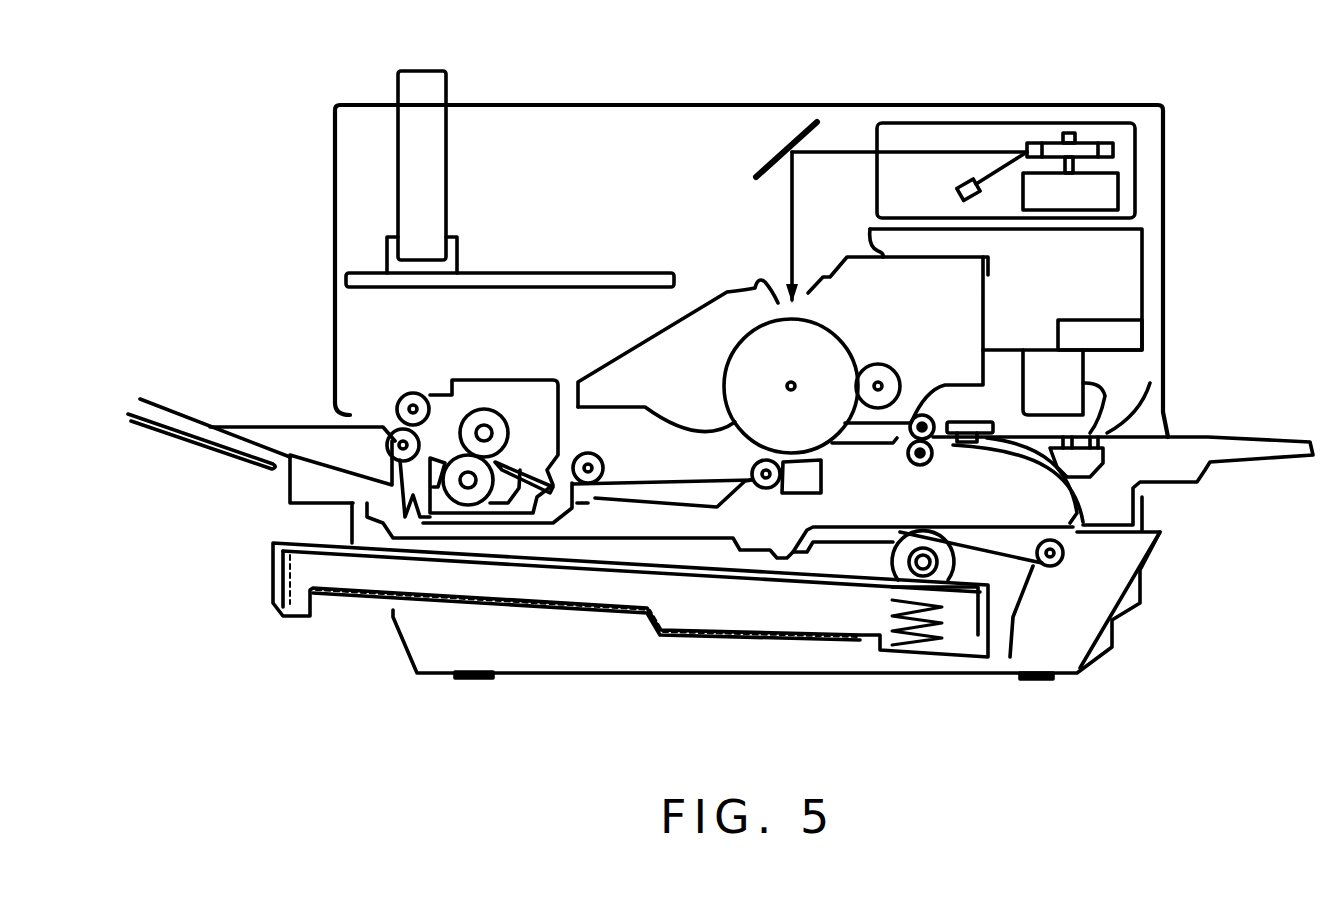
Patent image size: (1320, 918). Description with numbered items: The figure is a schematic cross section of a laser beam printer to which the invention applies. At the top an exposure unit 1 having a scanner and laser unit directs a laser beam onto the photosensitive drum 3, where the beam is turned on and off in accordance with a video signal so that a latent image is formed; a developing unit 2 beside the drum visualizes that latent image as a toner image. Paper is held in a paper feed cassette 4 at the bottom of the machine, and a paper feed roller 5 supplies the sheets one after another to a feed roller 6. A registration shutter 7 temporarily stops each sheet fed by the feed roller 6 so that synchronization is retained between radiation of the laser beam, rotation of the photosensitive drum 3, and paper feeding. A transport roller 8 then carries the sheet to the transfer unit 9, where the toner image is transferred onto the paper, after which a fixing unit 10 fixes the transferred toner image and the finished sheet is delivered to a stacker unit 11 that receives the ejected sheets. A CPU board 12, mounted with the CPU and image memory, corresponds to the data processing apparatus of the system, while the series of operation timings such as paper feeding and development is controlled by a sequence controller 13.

The exposure unit 1 is at (1137, 158).
The developing unit 2 is at (963, 307).
The photosensitive drum 3 is at (755, 330).
The paper feed cassette 4 is at (270, 572).
The paper feed roller 5 is at (902, 567).
The feed roller 6 is at (1040, 567).
The registration shutter 7 is at (438, 90).
The transport roller 8 is at (457, 250).
The transfer unit 9 is at (812, 483).
The fixing unit 10 is at (512, 379).
The stacker unit 11 is at (253, 440).
The CPU board 12 is at (573, 273).
The sequence controller 13 is at (1128, 335).